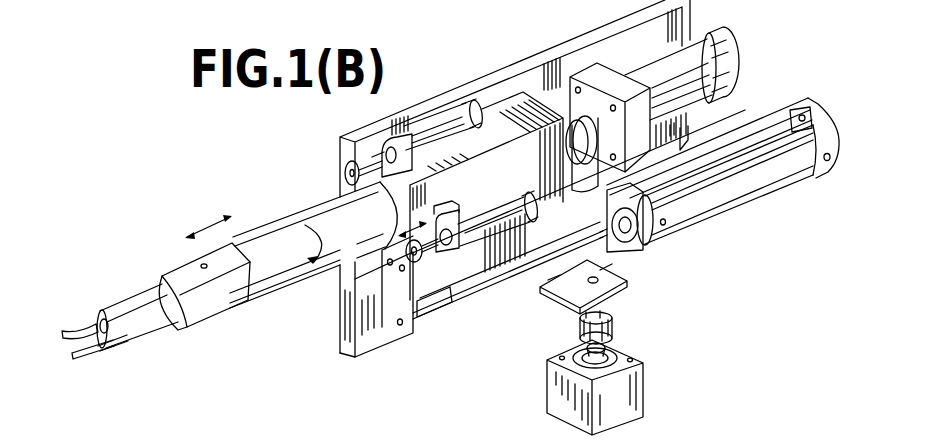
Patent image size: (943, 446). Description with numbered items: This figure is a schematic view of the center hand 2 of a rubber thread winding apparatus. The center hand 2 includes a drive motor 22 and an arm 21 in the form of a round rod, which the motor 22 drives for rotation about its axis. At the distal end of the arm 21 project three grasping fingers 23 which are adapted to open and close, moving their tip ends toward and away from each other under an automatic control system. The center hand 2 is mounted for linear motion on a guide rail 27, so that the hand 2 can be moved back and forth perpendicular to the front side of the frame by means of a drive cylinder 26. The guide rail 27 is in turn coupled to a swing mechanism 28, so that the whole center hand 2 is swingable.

The center hand 2 is at (165, 265).
The arm 21 is at (257, 280).
The drive motor 22 is at (712, 68).
The grasping fingers 23 is at (67, 328).
The drive cylinder 26 is at (714, 216).
The guide rail 27 is at (372, 345).
The swing mechanism 28 is at (634, 391).